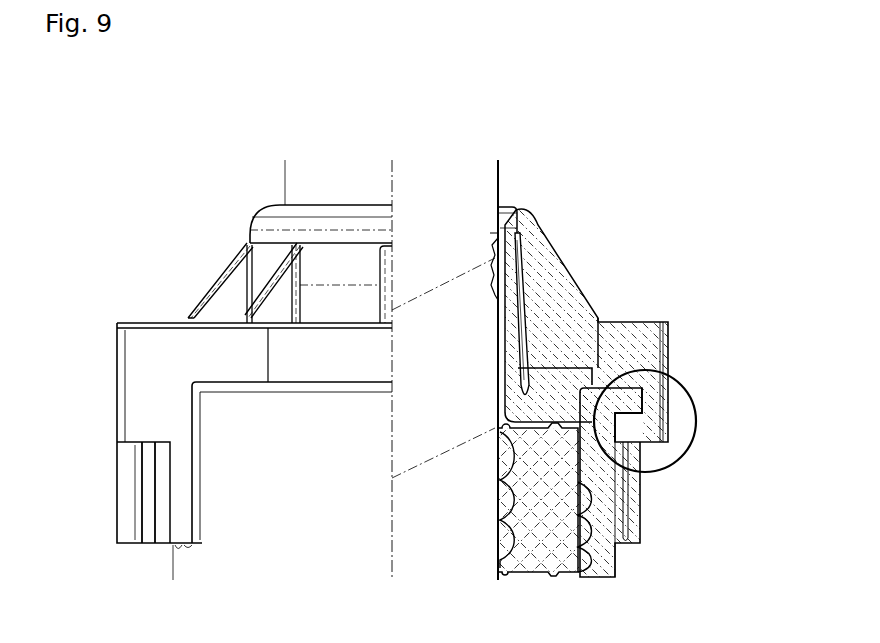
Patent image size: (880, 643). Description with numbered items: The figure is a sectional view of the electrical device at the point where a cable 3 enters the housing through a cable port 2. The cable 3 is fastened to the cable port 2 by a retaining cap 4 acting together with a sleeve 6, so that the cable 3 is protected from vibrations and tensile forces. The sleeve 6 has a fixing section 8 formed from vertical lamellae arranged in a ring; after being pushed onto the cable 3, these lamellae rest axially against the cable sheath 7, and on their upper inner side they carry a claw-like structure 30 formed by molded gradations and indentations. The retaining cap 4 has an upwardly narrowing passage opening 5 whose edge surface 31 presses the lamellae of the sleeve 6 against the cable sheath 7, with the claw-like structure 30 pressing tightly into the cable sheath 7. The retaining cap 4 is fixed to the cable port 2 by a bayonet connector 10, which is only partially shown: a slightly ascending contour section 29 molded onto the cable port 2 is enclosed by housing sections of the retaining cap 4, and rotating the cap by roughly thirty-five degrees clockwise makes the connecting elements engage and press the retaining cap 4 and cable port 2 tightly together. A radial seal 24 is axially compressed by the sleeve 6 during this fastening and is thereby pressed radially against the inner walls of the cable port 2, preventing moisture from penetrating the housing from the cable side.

The cable port 2 is at (263, 452).
The cable 3 is at (347, 170).
The retaining cap 4 is at (530, 266).
The passage opening 5 is at (508, 227).
The sleeve 6 is at (545, 403).
The cable sheath 7 is at (498, 172).
The fixing section 8 is at (517, 300).
The bayonet connector 10 is at (697, 440).
The radial seal 24 is at (560, 480).
The contour section 29 is at (636, 403).
The claw-like structure 30 is at (496, 263).
The edge surface 31 is at (530, 322).